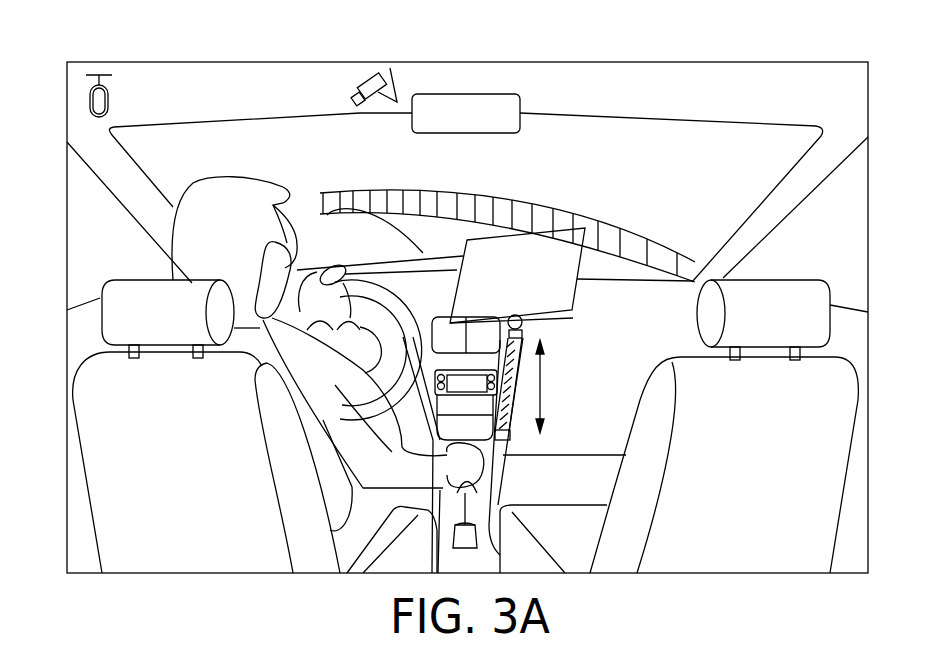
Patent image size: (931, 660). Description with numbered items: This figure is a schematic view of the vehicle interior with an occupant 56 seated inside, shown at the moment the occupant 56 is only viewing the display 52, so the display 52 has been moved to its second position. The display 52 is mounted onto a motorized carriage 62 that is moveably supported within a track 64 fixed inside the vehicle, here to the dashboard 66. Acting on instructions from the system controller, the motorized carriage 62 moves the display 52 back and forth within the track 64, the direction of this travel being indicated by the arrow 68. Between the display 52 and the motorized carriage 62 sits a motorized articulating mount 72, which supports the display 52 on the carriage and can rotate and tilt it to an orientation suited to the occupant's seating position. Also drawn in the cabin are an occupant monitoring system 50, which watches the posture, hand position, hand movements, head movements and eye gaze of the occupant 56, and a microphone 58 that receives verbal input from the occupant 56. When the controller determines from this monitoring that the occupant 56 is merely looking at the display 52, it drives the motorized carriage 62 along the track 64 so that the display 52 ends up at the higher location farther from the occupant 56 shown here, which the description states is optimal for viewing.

The occupant monitoring system 50 is at (368, 82).
The display 52 is at (534, 287).
The occupant 56 is at (200, 260).
The microphone 58 is at (105, 108).
The motorized carriage 62 is at (527, 334).
The track 64 is at (512, 437).
The dashboard 66 is at (428, 309).
The arrow 68 is at (543, 388).
The motorized articulating mount 72 is at (523, 321).